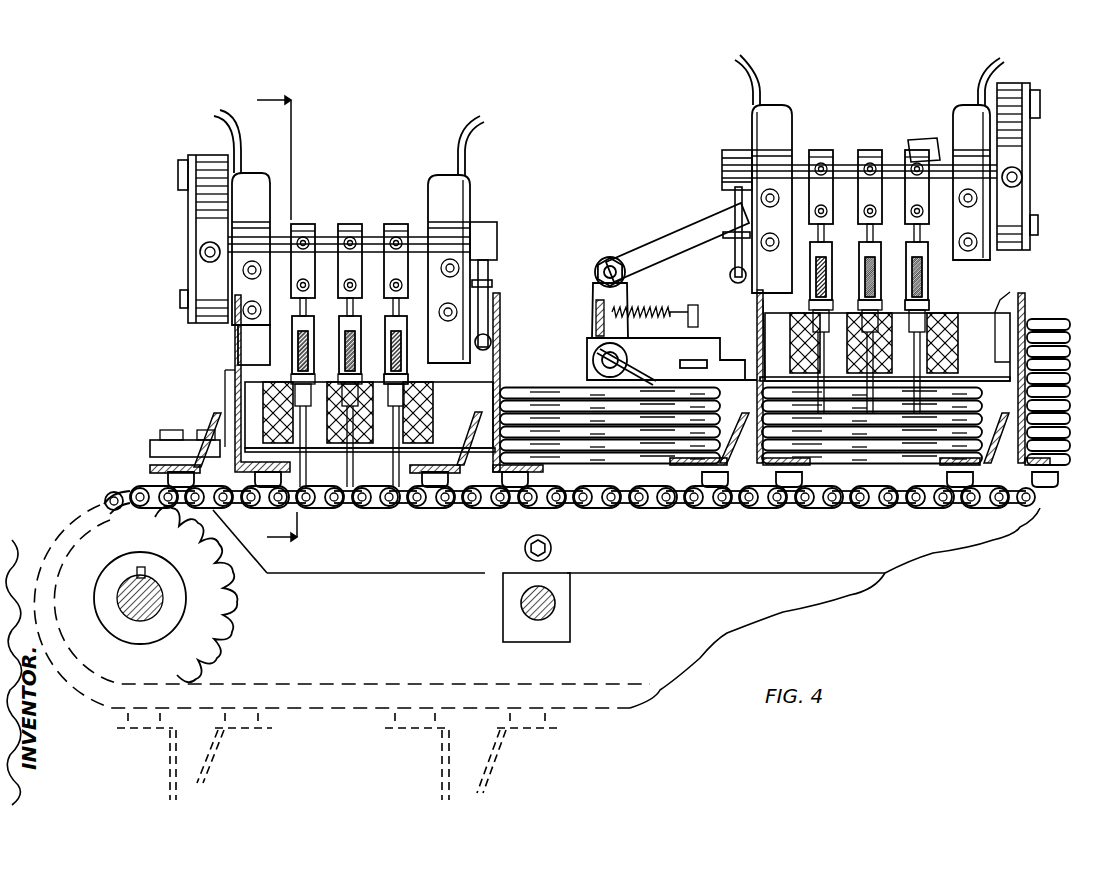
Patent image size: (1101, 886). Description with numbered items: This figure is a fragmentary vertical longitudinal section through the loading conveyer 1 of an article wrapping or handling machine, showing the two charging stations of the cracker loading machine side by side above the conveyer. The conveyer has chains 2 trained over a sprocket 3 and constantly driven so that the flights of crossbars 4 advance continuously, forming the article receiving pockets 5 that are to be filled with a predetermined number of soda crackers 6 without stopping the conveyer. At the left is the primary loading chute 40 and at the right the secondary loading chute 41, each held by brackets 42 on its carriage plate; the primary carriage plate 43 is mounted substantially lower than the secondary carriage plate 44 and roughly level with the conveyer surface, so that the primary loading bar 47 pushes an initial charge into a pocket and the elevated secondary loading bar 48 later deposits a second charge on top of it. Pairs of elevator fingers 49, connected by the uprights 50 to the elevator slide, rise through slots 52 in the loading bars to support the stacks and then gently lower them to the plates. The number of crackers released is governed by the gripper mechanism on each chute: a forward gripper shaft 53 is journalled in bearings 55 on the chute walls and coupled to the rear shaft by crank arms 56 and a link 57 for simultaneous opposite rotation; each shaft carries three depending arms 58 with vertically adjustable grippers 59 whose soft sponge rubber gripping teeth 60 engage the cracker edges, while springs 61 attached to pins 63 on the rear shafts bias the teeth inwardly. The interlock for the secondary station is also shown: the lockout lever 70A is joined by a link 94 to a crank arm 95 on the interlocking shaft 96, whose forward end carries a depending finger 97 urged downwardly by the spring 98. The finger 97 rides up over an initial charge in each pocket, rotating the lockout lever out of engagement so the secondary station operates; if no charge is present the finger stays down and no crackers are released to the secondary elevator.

The loading conveyer 1 is at (90, 500).
The chains 2 is at (688, 502).
The sprocket 3 is at (212, 608).
The crossbars 4 is at (150, 468).
The article receiving pockets 5 is at (940, 463).
The soda crackers 6 is at (555, 398).
The primary loading chute 40 is at (232, 135).
The secondary loading chute 41 is at (750, 85).
The brackets 42 is at (228, 393).
The primary carriage plate 43 is at (162, 452).
The secondary carriage plate 44 is at (745, 378).
The primary loading bar 47 is at (263, 392).
The secondary loading bar 48 is at (750, 315).
The elevator fingers 49 is at (408, 378).
The uprights 50 is at (395, 467).
The slots 52 is at (330, 432).
The forward gripper shaft 53 is at (420, 237).
The bearings 55 is at (245, 295).
The crank arms 56 is at (205, 185).
The link 57 is at (190, 237).
The depending arms 58 is at (305, 222).
The grippers 59 is at (345, 320).
The gripping teeth 60 is at (345, 352).
The springs 61 is at (492, 332).
The pins 63 is at (494, 285).
The lockout lever 70A is at (920, 140).
The link 94 is at (636, 250).
The crank arm 95 is at (597, 298).
The interlocking shaft 96 is at (598, 358).
The depending finger 97 is at (672, 361).
The spring 98 is at (640, 308).